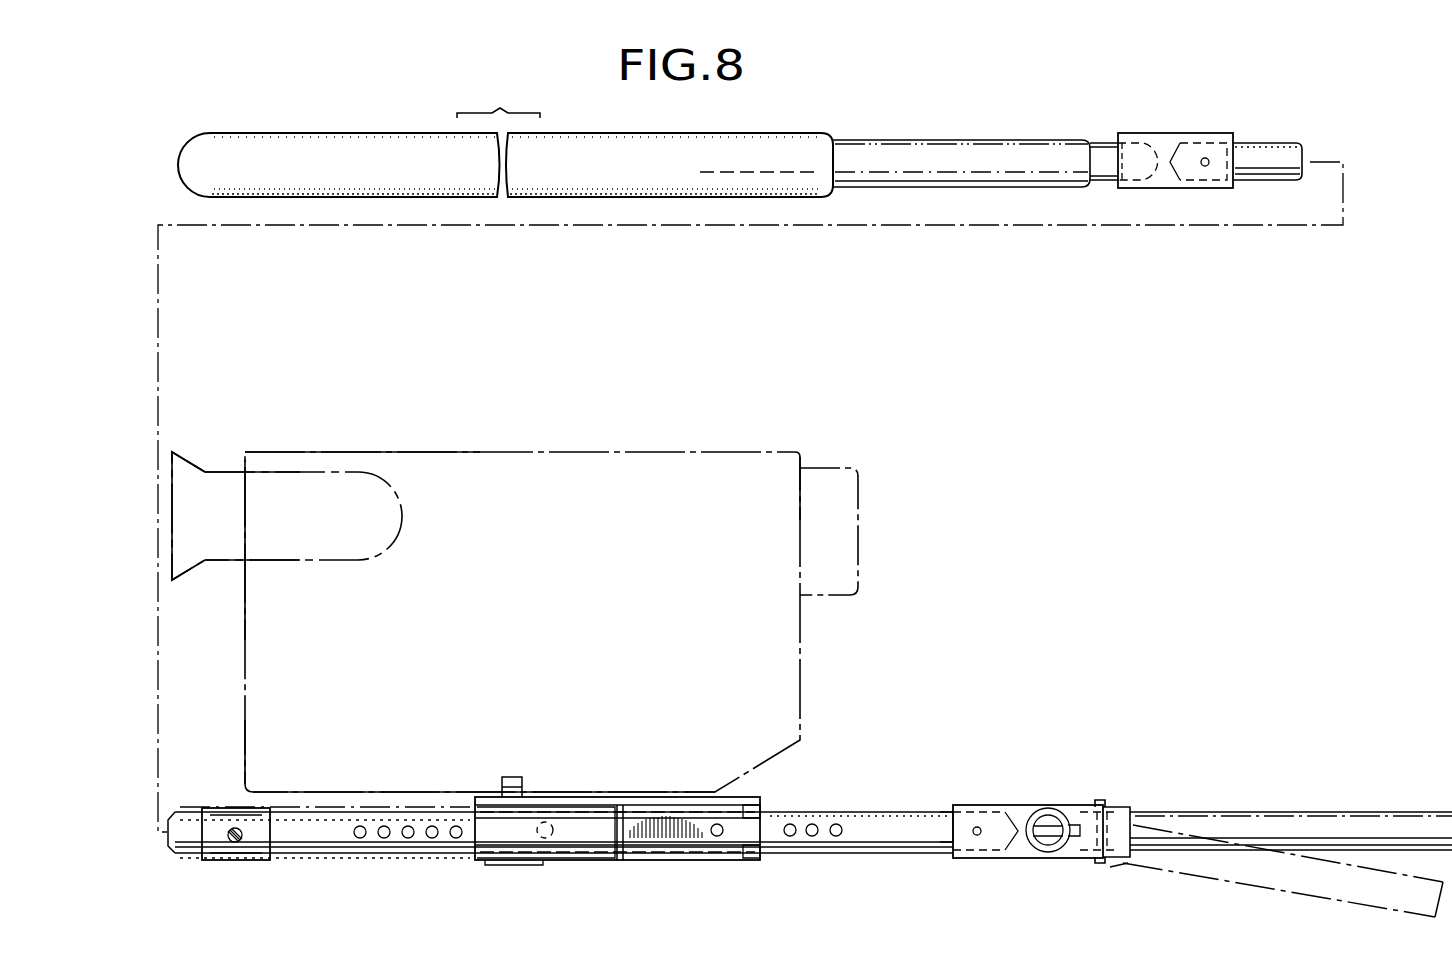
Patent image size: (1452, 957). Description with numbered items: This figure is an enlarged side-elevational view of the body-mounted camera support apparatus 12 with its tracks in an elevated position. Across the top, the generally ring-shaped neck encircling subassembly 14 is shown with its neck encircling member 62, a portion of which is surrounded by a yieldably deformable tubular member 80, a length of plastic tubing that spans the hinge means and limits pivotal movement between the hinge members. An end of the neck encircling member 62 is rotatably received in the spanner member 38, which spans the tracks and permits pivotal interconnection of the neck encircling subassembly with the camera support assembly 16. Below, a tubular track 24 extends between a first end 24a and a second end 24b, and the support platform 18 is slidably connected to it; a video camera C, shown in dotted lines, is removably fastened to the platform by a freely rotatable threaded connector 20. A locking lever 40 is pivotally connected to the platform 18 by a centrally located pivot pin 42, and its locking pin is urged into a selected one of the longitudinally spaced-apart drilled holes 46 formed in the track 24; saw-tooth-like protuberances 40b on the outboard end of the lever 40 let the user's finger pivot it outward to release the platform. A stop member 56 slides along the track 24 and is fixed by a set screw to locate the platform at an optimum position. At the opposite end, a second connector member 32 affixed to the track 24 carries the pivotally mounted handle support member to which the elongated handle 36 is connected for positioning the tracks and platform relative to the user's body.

The yieldably deformable tubular member 80 is at (377, 142).
The neck encircling subassembly 14 is at (920, 148).
The spanner member 38 is at (1160, 128).
The neck encircling member 62 is at (1110, 165).
The first end of track 24a is at (1258, 153).
The track 24 is at (877, 824).
The video camera C is at (767, 450).
The camera support apparatus 12 is at (1018, 664).
The stop member 56 is at (242, 814).
The drilled holes 46 is at (432, 839).
The camera support assembly 16 is at (596, 796).
The locking lever 40 is at (486, 830).
The saw-tooth-like protuberances 40b is at (755, 860).
The threaded connector 20 is at (518, 783).
The pivot pin 42 is at (615, 830).
The support platform 18 is at (651, 862).
The second end of track 24b is at (943, 823).
The second connector member 32 is at (1021, 815).
The handle 36 is at (1305, 827).